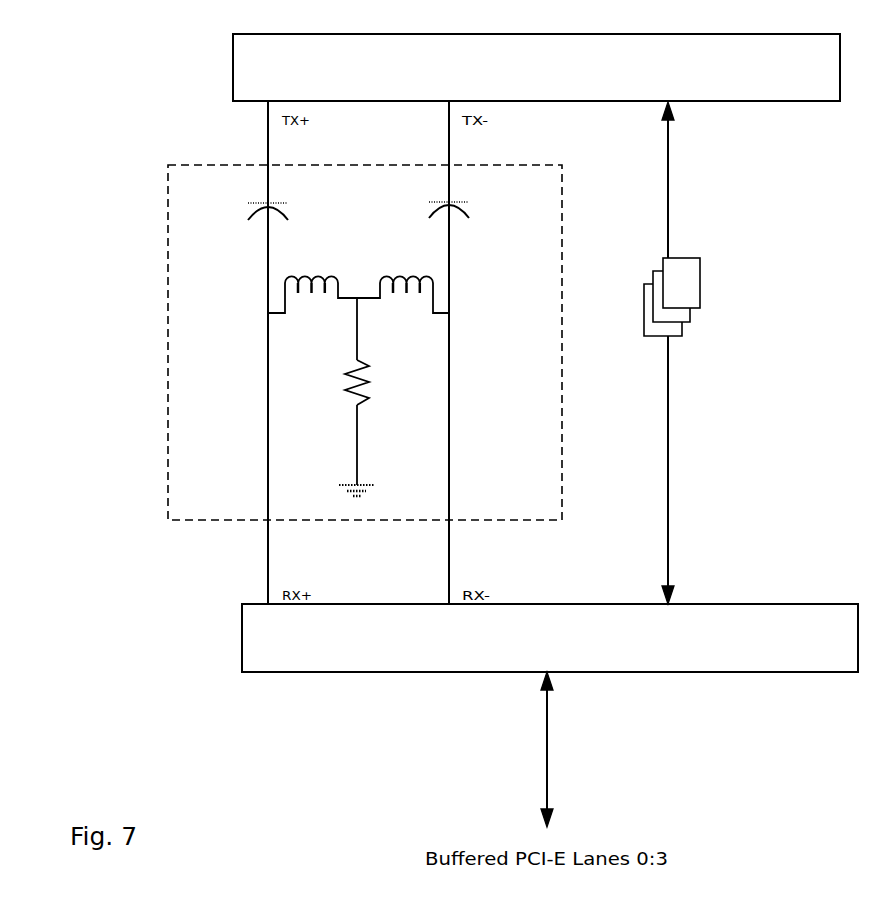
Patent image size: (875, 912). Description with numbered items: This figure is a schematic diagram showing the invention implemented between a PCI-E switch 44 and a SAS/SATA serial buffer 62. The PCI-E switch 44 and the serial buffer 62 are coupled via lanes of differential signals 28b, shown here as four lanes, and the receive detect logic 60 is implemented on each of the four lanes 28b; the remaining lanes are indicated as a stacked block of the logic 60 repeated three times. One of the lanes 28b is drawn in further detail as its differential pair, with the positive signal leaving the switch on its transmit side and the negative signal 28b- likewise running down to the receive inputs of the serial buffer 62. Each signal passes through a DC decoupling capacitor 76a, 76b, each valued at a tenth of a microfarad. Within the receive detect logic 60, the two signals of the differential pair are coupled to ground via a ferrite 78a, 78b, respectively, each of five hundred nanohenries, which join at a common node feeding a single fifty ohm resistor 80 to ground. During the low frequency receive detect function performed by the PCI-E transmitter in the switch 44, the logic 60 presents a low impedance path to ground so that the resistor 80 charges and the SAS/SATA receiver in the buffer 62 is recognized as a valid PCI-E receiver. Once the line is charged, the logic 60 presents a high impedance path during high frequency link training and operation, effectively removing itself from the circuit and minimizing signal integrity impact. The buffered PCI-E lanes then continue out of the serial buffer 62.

The PCI-E switch 44 is at (347, 33).
The receive detect logic 60 is at (168, 232).
The SAS/SATA serial buffer 62 is at (340, 672).
The DC decoupling capacitor 76a is at (257, 203).
The DC decoupling capacitor 76b is at (440, 197).
The ferrite 78a is at (285, 283).
The ferrite 78b is at (435, 283).
The resistor 80 is at (345, 382).
The lanes of differential signals 28b is at (668, 148).
The negative signal of differential pair 28b- is at (450, 558).